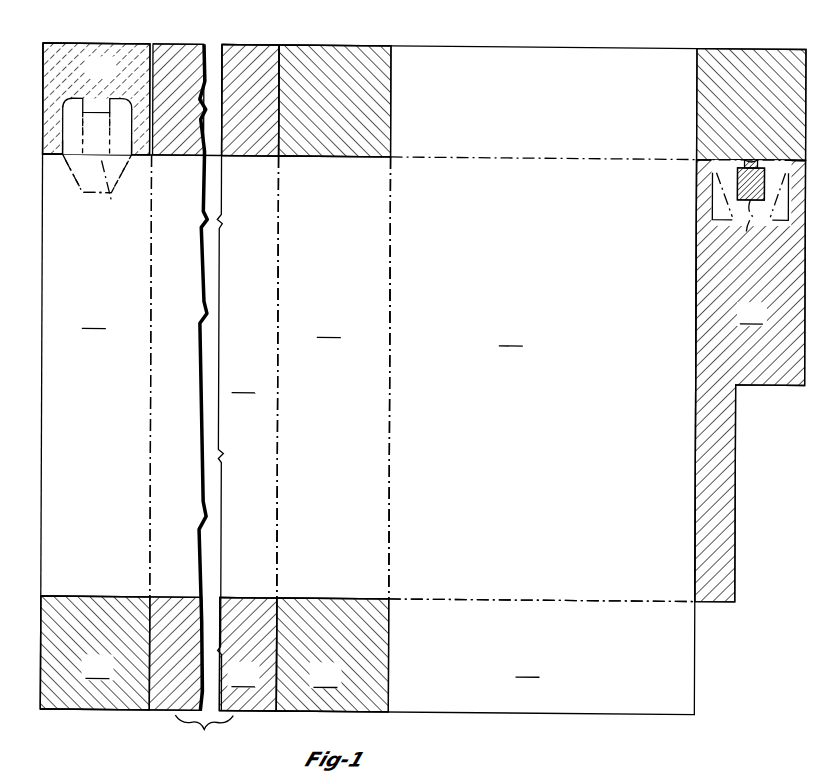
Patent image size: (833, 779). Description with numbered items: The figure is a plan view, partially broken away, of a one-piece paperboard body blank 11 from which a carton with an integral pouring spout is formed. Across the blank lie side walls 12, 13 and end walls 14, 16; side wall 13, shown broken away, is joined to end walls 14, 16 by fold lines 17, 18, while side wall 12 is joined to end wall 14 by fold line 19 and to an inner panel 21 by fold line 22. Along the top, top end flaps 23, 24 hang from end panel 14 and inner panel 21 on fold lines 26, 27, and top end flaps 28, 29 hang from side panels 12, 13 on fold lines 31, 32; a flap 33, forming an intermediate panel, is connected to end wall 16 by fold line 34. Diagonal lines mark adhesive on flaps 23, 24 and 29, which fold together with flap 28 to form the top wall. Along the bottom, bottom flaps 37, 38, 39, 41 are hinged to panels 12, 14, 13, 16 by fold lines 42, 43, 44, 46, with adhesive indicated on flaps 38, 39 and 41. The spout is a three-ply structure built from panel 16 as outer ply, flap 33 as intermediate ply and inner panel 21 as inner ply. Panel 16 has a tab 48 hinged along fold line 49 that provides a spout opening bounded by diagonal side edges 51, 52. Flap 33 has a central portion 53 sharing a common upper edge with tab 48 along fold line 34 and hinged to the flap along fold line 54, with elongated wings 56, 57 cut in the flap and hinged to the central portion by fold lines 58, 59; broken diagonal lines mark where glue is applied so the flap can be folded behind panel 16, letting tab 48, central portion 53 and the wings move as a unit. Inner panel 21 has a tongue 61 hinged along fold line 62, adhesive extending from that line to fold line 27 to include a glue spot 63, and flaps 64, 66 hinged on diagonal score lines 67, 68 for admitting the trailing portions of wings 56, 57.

The body blank 11 is at (197, 776).
The side wall 12 is at (543, 379).
The side wall 13 is at (247, 377).
The end wall 14 is at (334, 377).
The end wall 16 is at (96, 376).
The fold line 17 is at (279, 283).
The fold line 18 is at (153, 303).
The fold line 19 is at (391, 274).
The inner panel 21 is at (750, 381).
The fold line 22 is at (697, 282).
The top end flap 23 is at (340, 48).
The top end flap 24 is at (770, 47).
The fold line 26 is at (315, 157).
The fold line 27 is at (726, 151).
The top end flap 28 is at (563, 59).
The top end flap 29 is at (252, 52).
The fold line 31 is at (519, 158).
The fold line 32 is at (256, 155).
The flap 33 is at (62, 45).
The fold line 34 is at (133, 160).
The bottom flap 37 is at (367, 655).
The bottom flap 38 is at (332, 655).
The bottom flap 39 is at (247, 654).
The bottom flap 41 is at (94, 653).
The fold line 42 is at (521, 596).
The fold line 43 is at (314, 596).
The fold line 44 is at (256, 594).
The fold line 46 is at (83, 594).
The tab 48 is at (76, 195).
The fold line 49 is at (98, 202).
The diagonal side edge 51 is at (84, 184).
The diagonal side edge 52 is at (106, 189).
The central portion 53 is at (88, 130).
The fold line 54 is at (96, 106).
The wing 56 is at (67, 147).
The wing 57 is at (128, 144).
The fold line 58 is at (63, 142).
The fold line 59 is at (139, 132).
The tongue 61 is at (750, 157).
The fold line 62 is at (751, 226).
The glue spot 63 is at (747, 152).
The flap 64 is at (718, 207).
The flap 66 is at (797, 218).
The diagonal score line 67 is at (716, 201).
The diagonal score line 68 is at (775, 209).